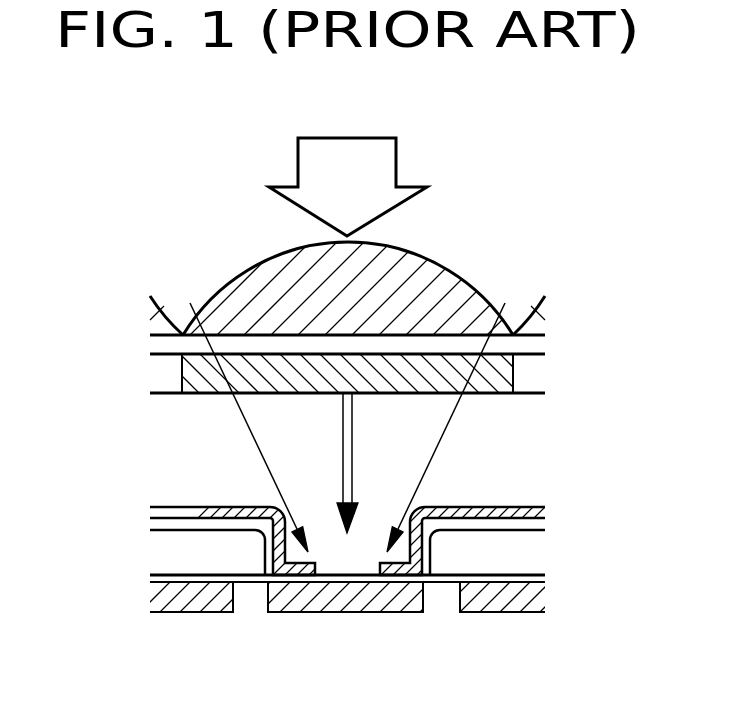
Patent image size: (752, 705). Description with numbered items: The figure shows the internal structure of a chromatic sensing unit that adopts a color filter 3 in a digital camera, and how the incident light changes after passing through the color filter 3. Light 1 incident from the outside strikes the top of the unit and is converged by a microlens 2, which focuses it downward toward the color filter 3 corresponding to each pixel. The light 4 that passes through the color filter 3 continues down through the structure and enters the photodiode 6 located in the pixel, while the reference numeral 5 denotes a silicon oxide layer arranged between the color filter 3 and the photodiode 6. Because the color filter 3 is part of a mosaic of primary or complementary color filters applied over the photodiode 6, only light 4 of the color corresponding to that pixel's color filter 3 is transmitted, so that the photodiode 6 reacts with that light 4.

The light 1 is at (397, 163).
The microlens 2 is at (447, 282).
The color filter 3 is at (498, 378).
The light 4 is at (372, 465).
The silicon oxide layer 5 is at (530, 555).
The photodiode 6 is at (348, 612).